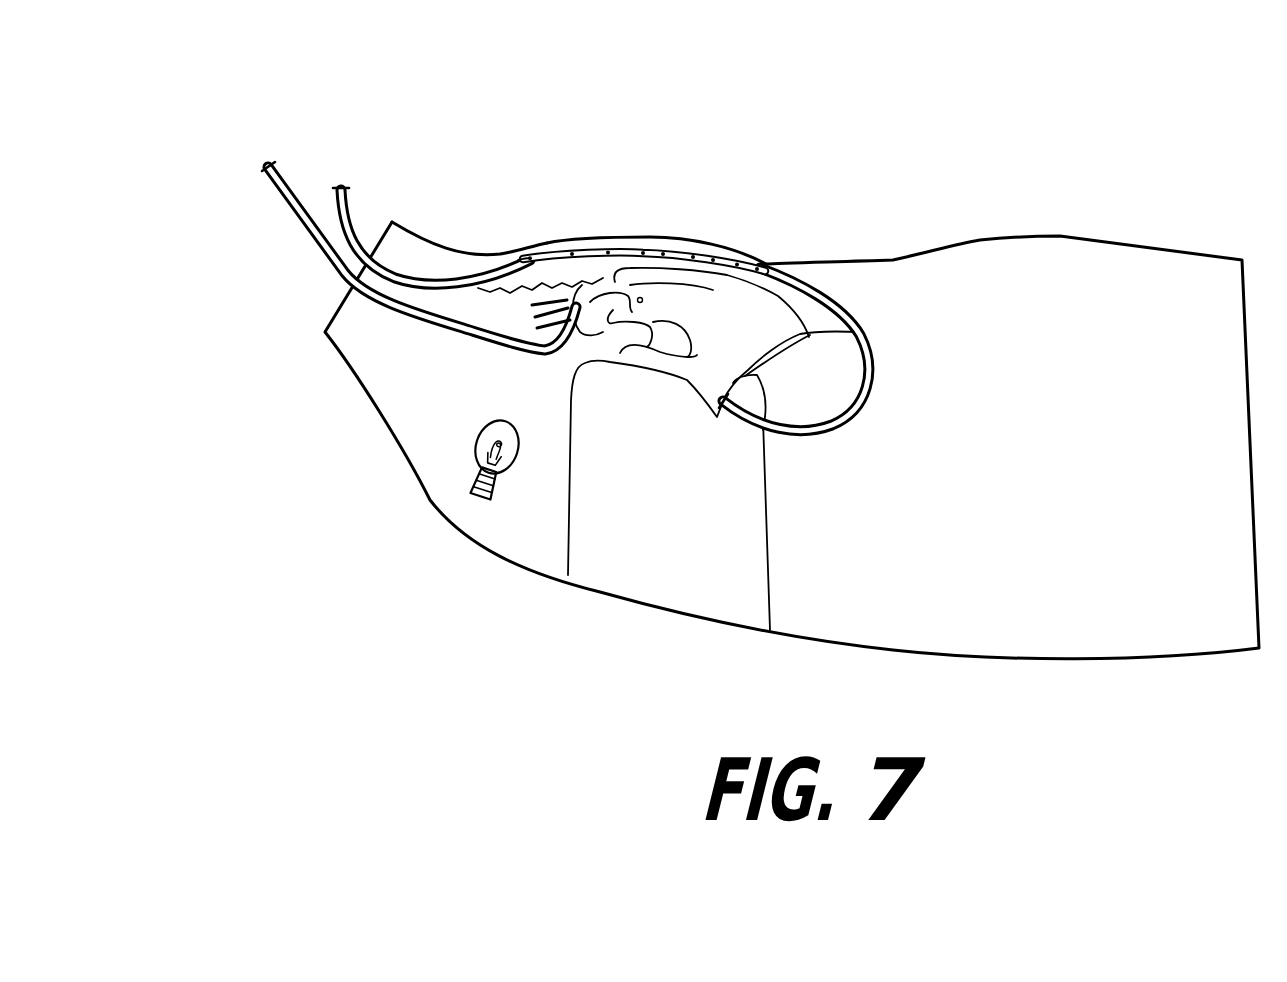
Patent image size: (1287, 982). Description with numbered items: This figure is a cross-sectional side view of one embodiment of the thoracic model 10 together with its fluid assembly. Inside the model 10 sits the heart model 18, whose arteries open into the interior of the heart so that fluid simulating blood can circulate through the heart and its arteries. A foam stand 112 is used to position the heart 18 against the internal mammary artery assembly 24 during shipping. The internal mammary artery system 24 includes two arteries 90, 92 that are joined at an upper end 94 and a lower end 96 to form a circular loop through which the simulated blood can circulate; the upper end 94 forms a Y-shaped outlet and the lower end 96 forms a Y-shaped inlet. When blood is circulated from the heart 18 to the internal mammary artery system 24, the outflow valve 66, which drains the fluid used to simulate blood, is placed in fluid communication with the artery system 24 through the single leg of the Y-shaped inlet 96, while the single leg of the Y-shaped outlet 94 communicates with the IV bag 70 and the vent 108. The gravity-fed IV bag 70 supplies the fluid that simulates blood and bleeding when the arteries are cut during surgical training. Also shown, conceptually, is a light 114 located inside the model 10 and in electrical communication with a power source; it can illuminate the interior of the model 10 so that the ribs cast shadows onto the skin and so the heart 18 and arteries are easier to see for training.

The model 10 is at (1024, 214).
The heart model 18 is at (640, 238).
The internal mammary artery system 24 is at (591, 234).
The outflow valve 66 is at (860, 332).
The IV bag 70 is at (259, 146).
The artery 90 is at (687, 253).
The artery 92 is at (710, 261).
The upper end (Y-shaped outlet) 94 is at (527, 256).
The lower end (Y-shaped inlet) 96 is at (772, 265).
The vent 108 is at (341, 188).
The foam stand 112 is at (617, 550).
The light 114 is at (477, 444).